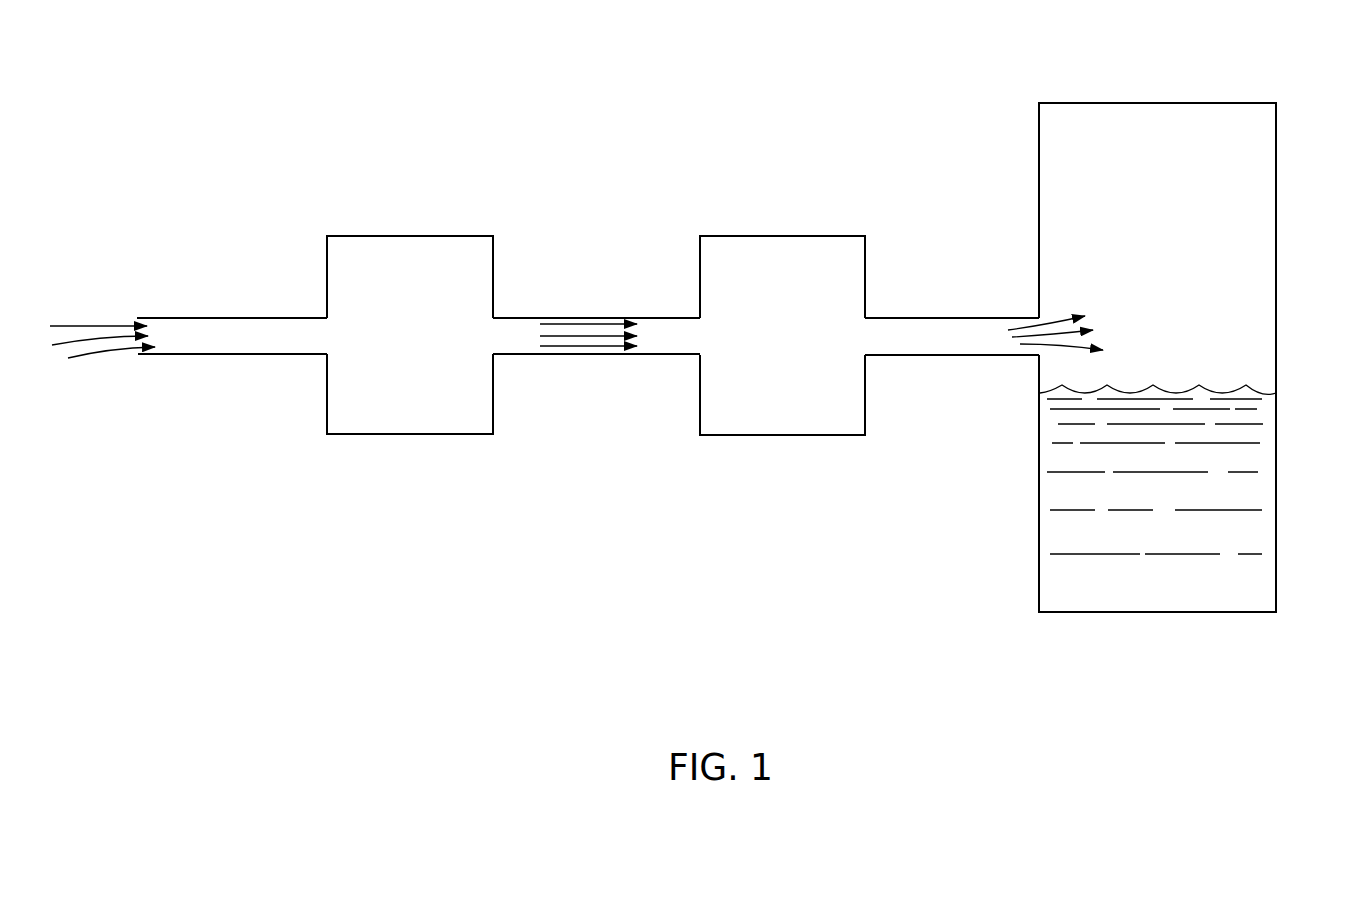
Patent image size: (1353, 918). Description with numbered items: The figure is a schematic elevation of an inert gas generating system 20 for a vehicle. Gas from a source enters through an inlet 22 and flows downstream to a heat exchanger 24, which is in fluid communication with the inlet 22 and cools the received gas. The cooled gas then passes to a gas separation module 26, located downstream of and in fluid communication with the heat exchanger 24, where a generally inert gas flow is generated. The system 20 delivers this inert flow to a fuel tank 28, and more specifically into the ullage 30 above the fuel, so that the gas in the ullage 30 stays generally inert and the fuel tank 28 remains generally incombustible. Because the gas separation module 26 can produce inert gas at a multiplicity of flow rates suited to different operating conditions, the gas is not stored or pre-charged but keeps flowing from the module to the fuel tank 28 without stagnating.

The inert gas generating system 20 is at (275, 165).
The inlet 22 is at (187, 356).
The heat exchanger 24 is at (416, 234).
The gas separation module 26 is at (784, 234).
The fuel tank 28 is at (1066, 613).
The ullage 30 is at (1239, 165).